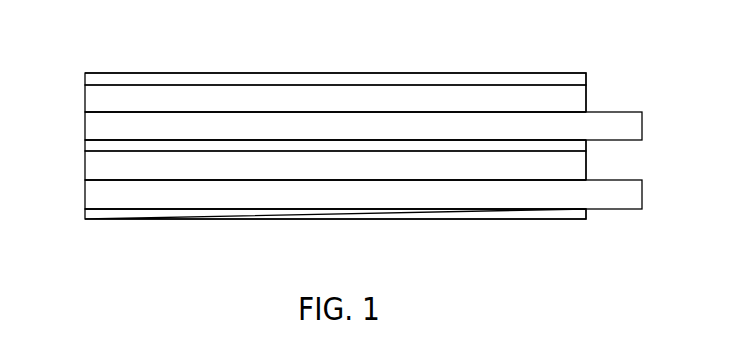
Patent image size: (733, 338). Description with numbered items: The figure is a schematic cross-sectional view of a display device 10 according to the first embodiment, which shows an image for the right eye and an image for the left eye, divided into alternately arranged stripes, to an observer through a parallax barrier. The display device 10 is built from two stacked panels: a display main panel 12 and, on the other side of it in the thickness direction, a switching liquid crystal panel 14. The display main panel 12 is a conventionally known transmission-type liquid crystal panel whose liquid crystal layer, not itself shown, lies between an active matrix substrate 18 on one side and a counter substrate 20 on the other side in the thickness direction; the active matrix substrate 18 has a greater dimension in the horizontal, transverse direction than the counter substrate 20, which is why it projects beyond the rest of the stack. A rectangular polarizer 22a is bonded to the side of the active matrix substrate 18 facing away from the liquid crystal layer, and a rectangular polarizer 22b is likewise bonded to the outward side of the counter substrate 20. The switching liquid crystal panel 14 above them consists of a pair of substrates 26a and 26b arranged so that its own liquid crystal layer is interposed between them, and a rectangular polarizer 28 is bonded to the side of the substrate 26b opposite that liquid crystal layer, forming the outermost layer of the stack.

The display device 10 is at (72, 57).
The display main panel 12 is at (624, 172).
The switching liquid crystal panel 14 is at (600, 94).
The active matrix substrate 18 is at (178, 198).
The counter substrate 20 is at (237, 170).
The polarizer 22a is at (115, 213).
The polarizer 22b is at (92, 148).
The substrate 26a is at (275, 128).
The substrate 26b is at (334, 102).
The polarizer 28 is at (409, 80).